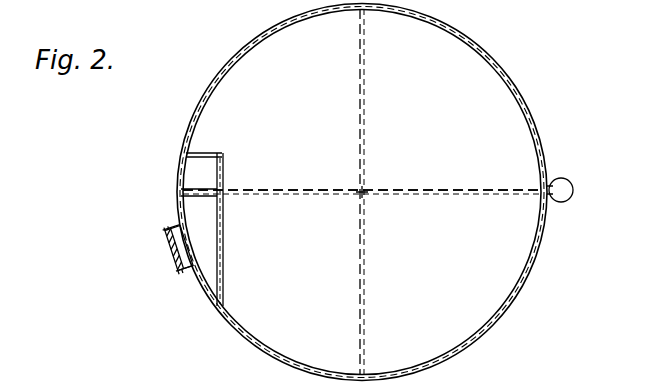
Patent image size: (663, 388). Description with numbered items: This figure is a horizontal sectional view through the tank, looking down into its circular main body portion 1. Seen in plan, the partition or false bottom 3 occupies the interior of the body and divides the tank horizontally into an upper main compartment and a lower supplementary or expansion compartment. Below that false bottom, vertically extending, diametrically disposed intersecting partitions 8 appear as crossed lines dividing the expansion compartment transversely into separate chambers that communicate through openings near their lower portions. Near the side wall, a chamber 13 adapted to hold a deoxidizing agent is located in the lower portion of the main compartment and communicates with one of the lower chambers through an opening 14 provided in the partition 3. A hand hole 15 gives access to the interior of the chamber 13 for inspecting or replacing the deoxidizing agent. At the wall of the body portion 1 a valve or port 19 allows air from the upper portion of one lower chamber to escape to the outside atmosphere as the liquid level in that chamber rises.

The main body portion 1 is at (541, 135).
The partition or false bottom 3 is at (363, 152).
The intersecting partitions 8 is at (428, 189).
The chamber 13 is at (195, 230).
The opening 14 is at (193, 172).
The hand hole 15 is at (177, 258).
The valve or port 19 is at (561, 202).